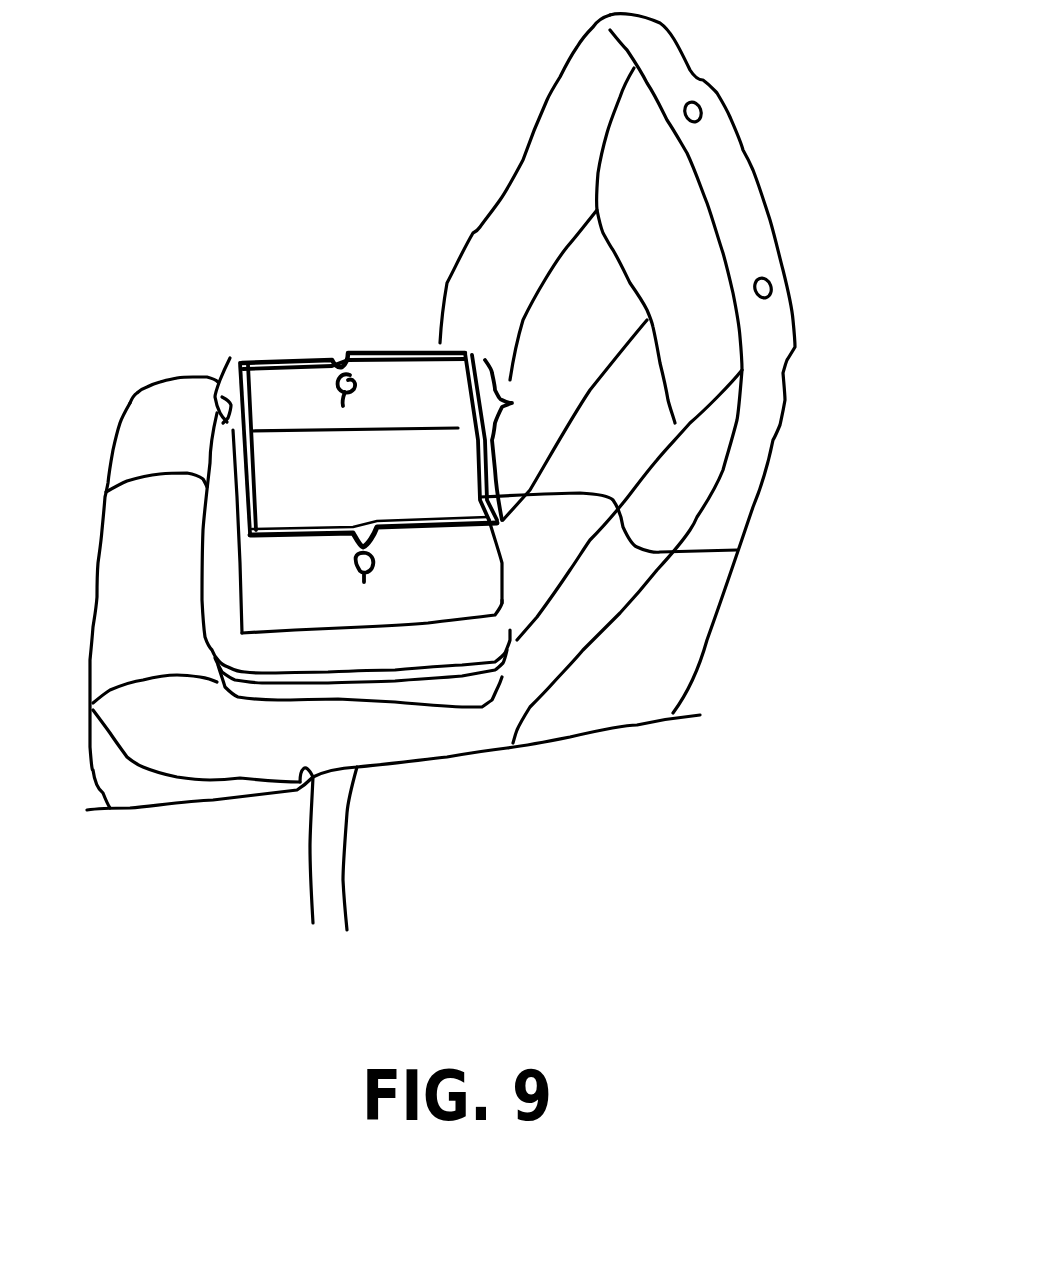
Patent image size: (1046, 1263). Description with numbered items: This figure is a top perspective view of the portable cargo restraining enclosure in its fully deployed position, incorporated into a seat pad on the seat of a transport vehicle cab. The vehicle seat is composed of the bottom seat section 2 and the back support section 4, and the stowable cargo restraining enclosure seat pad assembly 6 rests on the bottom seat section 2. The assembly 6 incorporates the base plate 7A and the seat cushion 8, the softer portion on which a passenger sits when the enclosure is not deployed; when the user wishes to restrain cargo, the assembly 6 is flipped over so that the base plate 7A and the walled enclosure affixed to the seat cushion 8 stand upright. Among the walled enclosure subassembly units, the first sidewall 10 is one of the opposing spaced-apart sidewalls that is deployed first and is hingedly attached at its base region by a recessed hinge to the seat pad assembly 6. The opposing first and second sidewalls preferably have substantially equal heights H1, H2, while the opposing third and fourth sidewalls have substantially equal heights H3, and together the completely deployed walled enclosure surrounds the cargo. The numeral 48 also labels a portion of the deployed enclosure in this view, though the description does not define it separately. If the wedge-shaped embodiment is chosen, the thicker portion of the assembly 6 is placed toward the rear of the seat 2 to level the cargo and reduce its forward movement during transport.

The bottom seat section 2 is at (147, 440).
The back support section 4 is at (510, 230).
The stowable cargo restraining enclosure seat pad assembly 6 is at (467, 333).
The inner panel 48 is at (317, 473).
The height of first sidewall H1 is at (507, 610).
The height of second sidewall H2 is at (218, 382).
The height of third and fourth sidewalls H3 is at (480, 360).
The first sidewall 10 is at (737, 550).
The base plate 7A is at (402, 660).
The seat cushion 8 is at (340, 699).